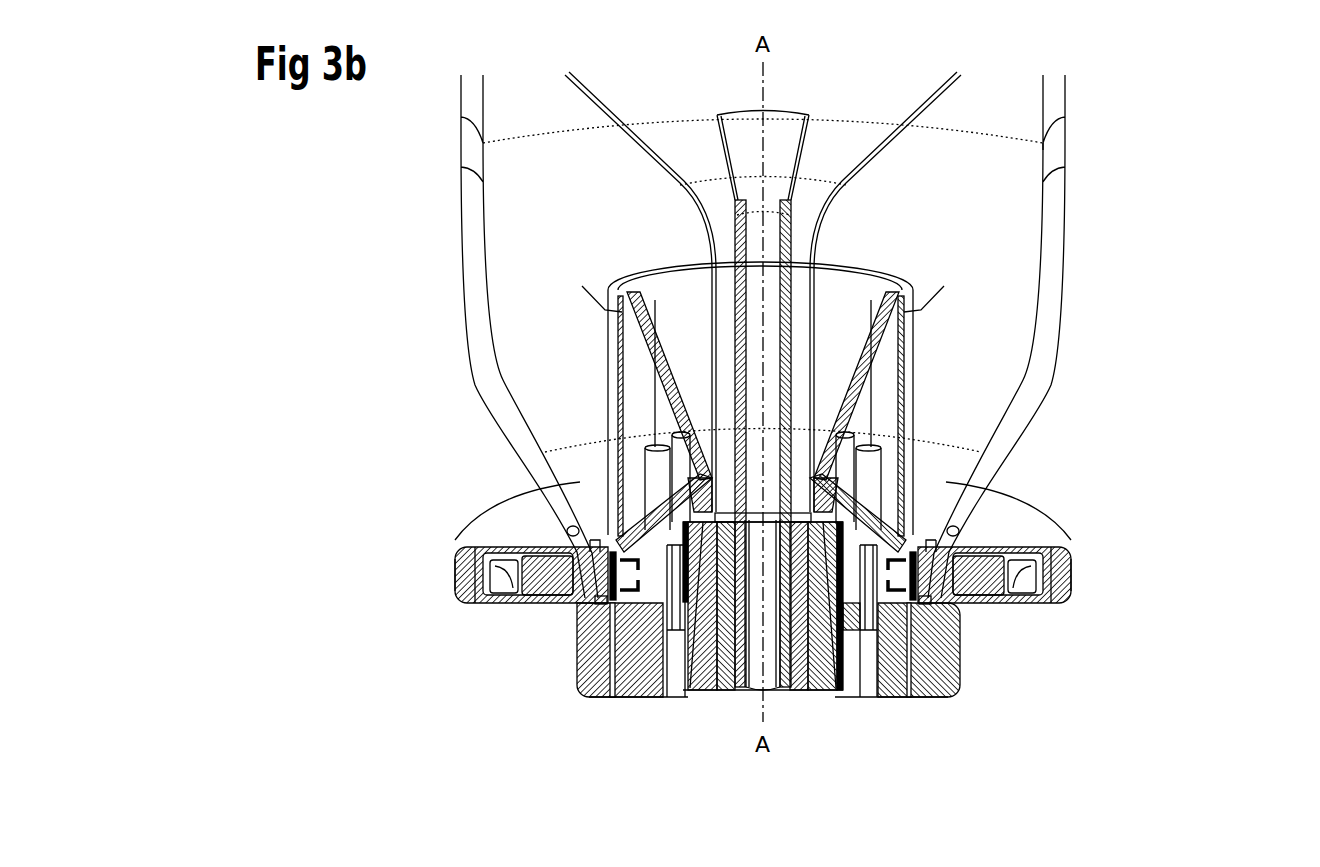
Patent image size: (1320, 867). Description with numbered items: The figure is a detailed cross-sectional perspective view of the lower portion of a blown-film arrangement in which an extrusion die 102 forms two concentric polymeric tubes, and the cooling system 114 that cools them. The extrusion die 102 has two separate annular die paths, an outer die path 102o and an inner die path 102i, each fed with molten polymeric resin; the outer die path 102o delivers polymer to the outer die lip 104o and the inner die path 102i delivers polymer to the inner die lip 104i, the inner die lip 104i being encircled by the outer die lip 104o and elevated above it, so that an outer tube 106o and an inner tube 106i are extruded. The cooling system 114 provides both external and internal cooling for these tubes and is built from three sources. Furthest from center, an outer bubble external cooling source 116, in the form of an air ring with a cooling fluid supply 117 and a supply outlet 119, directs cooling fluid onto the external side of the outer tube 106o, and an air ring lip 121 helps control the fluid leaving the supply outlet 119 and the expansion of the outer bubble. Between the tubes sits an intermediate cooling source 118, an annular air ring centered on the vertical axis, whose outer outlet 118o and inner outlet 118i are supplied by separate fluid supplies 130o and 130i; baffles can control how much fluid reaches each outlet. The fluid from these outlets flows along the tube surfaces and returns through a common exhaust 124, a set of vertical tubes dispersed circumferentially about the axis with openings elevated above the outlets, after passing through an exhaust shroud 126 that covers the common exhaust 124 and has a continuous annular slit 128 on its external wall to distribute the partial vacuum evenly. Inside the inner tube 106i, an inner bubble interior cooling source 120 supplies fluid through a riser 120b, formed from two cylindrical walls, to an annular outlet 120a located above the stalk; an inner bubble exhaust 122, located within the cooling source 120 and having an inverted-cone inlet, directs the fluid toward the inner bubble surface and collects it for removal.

The extrusion die 102 is at (508, 719).
The inner die path 102i is at (720, 696).
The outer die path 102o is at (611, 700).
The inner die lip 104i is at (700, 695).
The outer die lip 104o is at (578, 608).
The inner tube 106i is at (690, 193).
The outer tube 106o is at (476, 321).
The cooling system 114 is at (338, 412).
The outer bubble external cooling source 116 is at (453, 498).
The cooling fluid supply 117 is at (498, 581).
The intermediate cooling source 118 is at (985, 213).
The inner outlet 118i is at (678, 498).
The outer outlet 118o is at (612, 592).
The supply outlet 119 is at (600, 603).
The inner bubble interior cooling source 120 is at (806, 79).
The outlet 120a is at (726, 184).
The riser 120b is at (798, 221).
The air ring lip 121 is at (600, 526).
The inner bubble exhaust 122 is at (750, 127).
The common exhaust 124 is at (638, 409).
The exhaust shroud 126 is at (618, 271).
The annular slit 128 is at (594, 299).
The inner fluid supply 130i is at (668, 695).
The outer fluid supply 130o is at (869, 698).